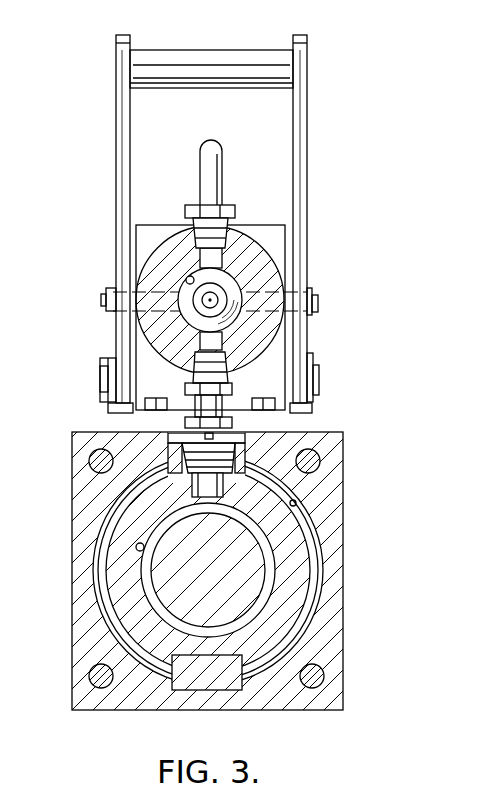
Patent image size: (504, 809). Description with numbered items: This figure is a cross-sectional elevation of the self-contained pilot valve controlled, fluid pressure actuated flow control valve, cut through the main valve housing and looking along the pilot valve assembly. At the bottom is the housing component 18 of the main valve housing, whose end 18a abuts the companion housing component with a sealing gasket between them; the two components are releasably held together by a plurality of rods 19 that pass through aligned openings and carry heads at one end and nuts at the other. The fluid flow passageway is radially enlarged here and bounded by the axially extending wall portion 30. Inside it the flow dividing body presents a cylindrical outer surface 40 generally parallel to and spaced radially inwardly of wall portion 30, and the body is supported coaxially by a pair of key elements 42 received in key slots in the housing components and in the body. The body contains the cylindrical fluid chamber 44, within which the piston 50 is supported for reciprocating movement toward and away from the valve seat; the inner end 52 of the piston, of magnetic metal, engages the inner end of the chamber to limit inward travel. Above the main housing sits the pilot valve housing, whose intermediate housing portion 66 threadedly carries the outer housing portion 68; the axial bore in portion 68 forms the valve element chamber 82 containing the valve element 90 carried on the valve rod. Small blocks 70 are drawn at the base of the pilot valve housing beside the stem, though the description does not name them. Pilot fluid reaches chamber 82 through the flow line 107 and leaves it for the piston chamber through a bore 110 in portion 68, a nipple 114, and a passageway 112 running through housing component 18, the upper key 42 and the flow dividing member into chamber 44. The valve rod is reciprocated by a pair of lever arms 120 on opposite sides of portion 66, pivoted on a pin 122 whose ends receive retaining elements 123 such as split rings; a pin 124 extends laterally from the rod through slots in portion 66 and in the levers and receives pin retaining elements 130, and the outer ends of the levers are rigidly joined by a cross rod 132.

The housing component 18 is at (343, 560).
The end of housing component 18a is at (330, 530).
The rods 19 is at (97, 462).
The axially extending wall portion 30 is at (297, 503).
The outer surface 40 is at (294, 622).
The key elements 42 is at (172, 458).
The fluid chamber 44 is at (136, 548).
The piston 50 is at (144, 590).
The inner end of piston 52 is at (246, 587).
The intermediate housing portion 66 is at (272, 236).
The outer housing portion 68 is at (274, 260).
The stop blocks 70 is at (160, 397).
The valve element chamber 82 is at (187, 279).
The valve element 90 is at (198, 262).
The flow line 107 is at (224, 147).
The bore 110 is at (200, 342).
The passageway 112 is at (199, 490).
The nipple 114 is at (195, 405).
The lever arms 120 is at (116, 135).
The pin 122 is at (101, 385).
The retaining elements 123 is at (101, 360).
The pin 124 is at (318, 304).
The pin retaining elements 130 is at (107, 296).
The cross rod 132 is at (242, 50).